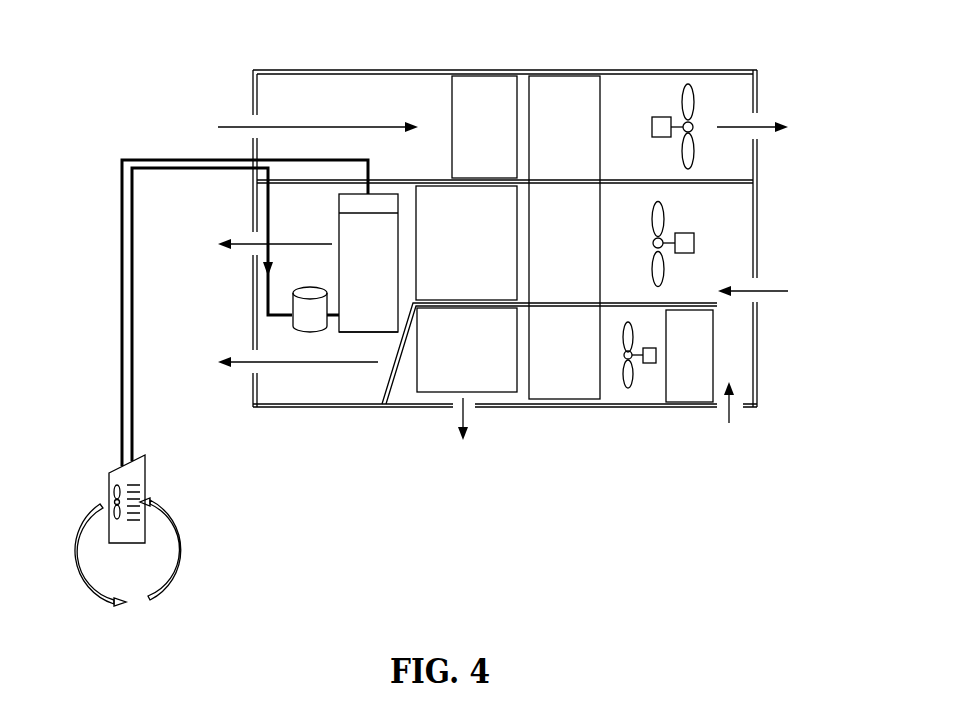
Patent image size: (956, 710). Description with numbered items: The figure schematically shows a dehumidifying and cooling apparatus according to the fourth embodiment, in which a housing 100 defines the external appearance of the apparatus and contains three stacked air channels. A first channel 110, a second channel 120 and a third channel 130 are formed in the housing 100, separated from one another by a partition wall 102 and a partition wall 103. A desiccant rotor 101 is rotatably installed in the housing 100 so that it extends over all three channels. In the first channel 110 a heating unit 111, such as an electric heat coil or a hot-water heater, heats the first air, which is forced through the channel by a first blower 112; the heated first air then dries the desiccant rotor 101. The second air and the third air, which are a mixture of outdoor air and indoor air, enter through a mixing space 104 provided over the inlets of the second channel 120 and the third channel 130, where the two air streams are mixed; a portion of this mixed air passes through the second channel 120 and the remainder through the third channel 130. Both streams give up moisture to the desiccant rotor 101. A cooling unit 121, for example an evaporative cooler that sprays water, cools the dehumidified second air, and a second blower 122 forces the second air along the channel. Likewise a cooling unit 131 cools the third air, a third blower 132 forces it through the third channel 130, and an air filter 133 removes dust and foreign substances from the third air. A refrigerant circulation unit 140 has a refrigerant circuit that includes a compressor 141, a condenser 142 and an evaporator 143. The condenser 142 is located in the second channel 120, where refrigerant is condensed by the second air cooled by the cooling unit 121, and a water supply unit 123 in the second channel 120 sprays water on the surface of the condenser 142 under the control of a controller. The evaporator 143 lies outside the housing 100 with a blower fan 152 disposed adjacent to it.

The housing 100 is at (637, 67).
The desiccant rotor 101 is at (572, 82).
The partition wall 102 is at (723, 182).
The partition wall 103 is at (612, 306).
The mixing space 104 is at (739, 314).
The first channel 110 is at (318, 87).
The heating unit 111 is at (488, 82).
The first blower 112 is at (688, 86).
The second channel 120 is at (633, 208).
The cooling unit 121 is at (440, 190).
The second blower 122 is at (664, 270).
The water supply unit 123 is at (339, 203).
The third channel 130 is at (640, 387).
The cooling unit 131 is at (490, 388).
The third blower 132 is at (626, 390).
The air filter 133 is at (691, 396).
The refrigerant circulation unit 140 is at (151, 156).
The compressor 141 is at (293, 323).
The condenser 142 is at (362, 331).
The evaporator 143 is at (145, 472).
The blower fan 152 is at (112, 490).